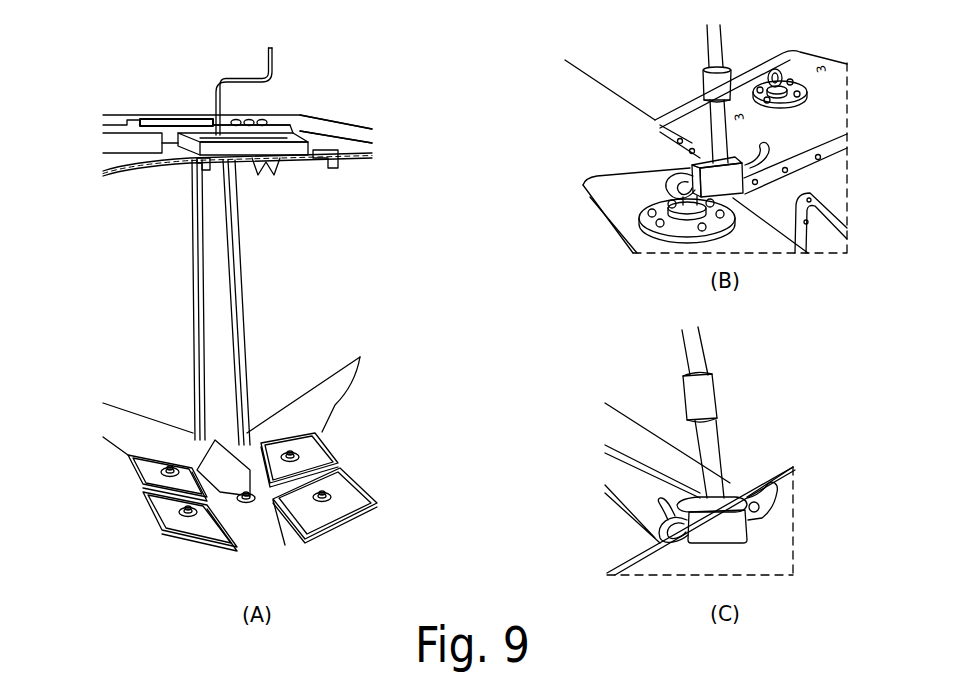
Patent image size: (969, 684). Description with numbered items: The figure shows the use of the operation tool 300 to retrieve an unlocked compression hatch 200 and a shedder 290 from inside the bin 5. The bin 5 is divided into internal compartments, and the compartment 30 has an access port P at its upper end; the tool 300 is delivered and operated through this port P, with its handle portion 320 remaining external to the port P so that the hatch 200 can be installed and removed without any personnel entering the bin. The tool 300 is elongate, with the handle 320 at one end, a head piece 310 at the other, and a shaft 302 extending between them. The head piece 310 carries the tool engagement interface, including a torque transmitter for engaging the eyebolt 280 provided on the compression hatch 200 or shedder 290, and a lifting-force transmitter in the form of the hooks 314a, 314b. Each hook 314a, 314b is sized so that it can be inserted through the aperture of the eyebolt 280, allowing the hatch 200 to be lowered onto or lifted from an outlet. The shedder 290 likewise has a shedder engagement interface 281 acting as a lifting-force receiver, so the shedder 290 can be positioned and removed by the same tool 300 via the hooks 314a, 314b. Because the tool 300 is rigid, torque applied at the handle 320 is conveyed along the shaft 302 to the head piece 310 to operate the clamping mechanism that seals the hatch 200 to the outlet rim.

The bin structure 5 is at (375, 108).
The compartment 30 is at (364, 398).
The compression hatch 200 is at (128, 457).
The eyebolt 280 is at (774, 72).
The shedder engagement interface 281 is at (644, 542).
The shedder 290 is at (763, 555).
The operation tool 300 is at (215, 100).
The shaft 302 is at (713, 45).
The head piece 310 is at (755, 198).
The hook 314a is at (770, 502).
The hook 314b is at (687, 173).
The handle portion 320 is at (292, 56).
The port P is at (274, 128).